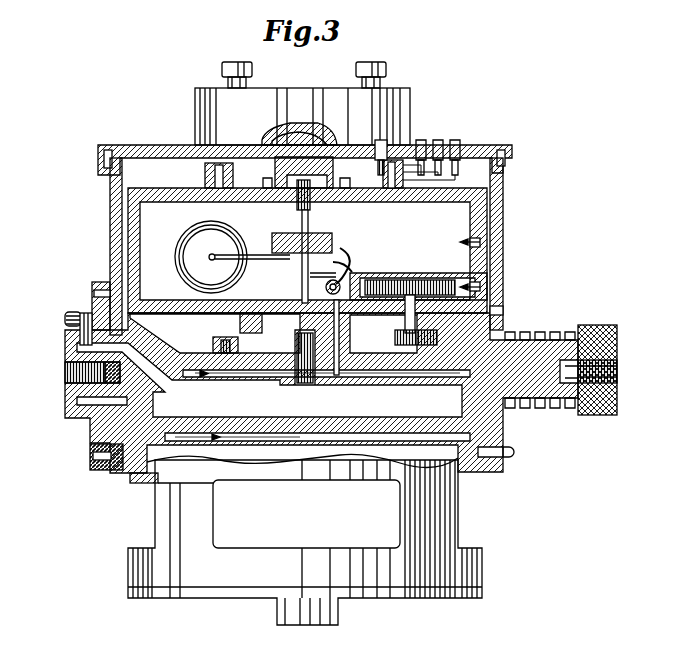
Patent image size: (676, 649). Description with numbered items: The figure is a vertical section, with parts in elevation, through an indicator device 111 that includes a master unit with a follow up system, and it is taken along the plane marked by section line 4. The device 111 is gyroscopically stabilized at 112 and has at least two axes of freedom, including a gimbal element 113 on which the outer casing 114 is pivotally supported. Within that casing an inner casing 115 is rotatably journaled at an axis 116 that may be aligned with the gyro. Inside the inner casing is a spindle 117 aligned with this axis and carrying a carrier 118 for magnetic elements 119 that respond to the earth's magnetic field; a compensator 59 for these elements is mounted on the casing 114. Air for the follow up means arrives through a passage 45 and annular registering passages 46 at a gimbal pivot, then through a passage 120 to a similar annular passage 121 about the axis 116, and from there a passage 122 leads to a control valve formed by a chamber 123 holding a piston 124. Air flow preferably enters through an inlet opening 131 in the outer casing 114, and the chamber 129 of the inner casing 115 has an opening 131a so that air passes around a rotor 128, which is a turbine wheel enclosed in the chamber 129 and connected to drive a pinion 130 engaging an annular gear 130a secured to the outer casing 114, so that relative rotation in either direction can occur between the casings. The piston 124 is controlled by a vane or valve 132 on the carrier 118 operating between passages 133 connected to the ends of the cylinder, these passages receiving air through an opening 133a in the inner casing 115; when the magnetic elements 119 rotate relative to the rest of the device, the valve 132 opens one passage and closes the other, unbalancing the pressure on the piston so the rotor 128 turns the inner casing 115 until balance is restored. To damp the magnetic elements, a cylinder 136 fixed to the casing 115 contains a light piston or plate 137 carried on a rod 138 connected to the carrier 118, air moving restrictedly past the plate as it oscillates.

The section line 4- 4 is at (72, 205).
The passage 45 is at (73, 312).
The annular registering passages 46 is at (87, 405).
The compensator 59 is at (213, 84).
The device 111 is at (133, 121).
The gyroscopic stabilization 112 is at (128, 507).
The gimbal element 113 is at (590, 328).
The casing 114 is at (503, 186).
The inner casing 115 is at (130, 250).
The axis 116 is at (262, 326).
The spindle 117 is at (308, 230).
The carrier 118 is at (325, 262).
The magnetic elements 119 is at (298, 236).
The passage 120 is at (172, 380).
The annular passage 121 is at (343, 384).
The passage 122 is at (345, 323).
The chamber 123 is at (356, 276).
The piston 124 is at (325, 290).
The rotor 128 is at (430, 282).
The chamber 129 is at (462, 282).
The pinion 130 is at (432, 340).
The annular gear 130a is at (213, 345).
The inlet opening 131 is at (505, 314).
The opening 131a is at (503, 284).
The vane or valve 132 is at (355, 262).
The passages 133 is at (352, 256).
The opening 133a is at (503, 242).
The cylinder 136 is at (176, 253).
The piston or plate 137 is at (197, 237).
The rod 138 is at (257, 250).